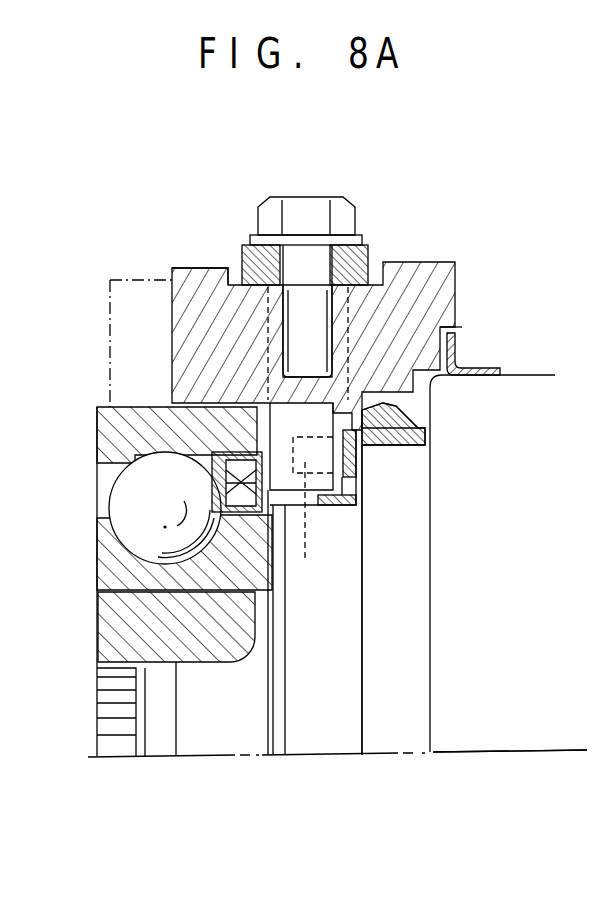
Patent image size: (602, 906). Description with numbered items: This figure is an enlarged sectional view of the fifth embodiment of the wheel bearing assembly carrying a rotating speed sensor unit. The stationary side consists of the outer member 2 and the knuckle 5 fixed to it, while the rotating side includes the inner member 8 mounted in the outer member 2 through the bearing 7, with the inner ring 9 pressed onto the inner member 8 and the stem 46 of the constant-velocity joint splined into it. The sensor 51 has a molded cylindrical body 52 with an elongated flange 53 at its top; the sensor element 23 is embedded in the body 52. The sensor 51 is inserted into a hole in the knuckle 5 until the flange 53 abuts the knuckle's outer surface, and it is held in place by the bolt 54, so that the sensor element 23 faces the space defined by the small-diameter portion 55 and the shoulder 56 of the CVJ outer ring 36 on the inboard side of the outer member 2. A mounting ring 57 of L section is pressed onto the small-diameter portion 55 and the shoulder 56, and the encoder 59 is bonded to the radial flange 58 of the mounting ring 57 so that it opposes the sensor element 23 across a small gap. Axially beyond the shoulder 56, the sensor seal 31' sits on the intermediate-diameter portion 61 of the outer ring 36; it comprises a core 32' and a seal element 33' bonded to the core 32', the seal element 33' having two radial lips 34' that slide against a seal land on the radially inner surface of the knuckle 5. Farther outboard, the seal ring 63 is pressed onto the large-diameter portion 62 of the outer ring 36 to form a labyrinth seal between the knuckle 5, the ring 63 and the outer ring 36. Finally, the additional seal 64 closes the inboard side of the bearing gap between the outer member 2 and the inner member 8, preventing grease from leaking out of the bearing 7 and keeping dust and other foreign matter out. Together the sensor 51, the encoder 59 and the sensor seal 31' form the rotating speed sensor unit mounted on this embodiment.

The outer member 2 is at (97, 437).
The knuckle 5 is at (420, 288).
The bearing 7 is at (123, 488).
The inner member 8 is at (98, 627).
The inner ring 9 is at (120, 540).
The sensor element 23 is at (311, 530).
The sensor seal 31' is at (442, 454).
The core 32' is at (473, 582).
The seal element 33' is at (441, 419).
The radial lips 34' is at (453, 348).
The outer ring 36 is at (522, 362).
The stem 46 is at (117, 735).
The sensor 51 is at (241, 250).
The molded cylindrical body 52 is at (290, 413).
The elongated flange 53 is at (353, 264).
The bolt 54 is at (318, 210).
The small-diameter portion 55 is at (320, 718).
The shoulder 56 is at (362, 487).
The mounting ring 57 is at (337, 512).
The radial flange 58 is at (363, 468).
The encoder 59 is at (328, 433).
The intermediate-diameter portion 61 is at (397, 718).
The large-diameter portion 62 is at (517, 718).
The seal ring 63 is at (458, 345).
The additional seal 64 is at (227, 512).